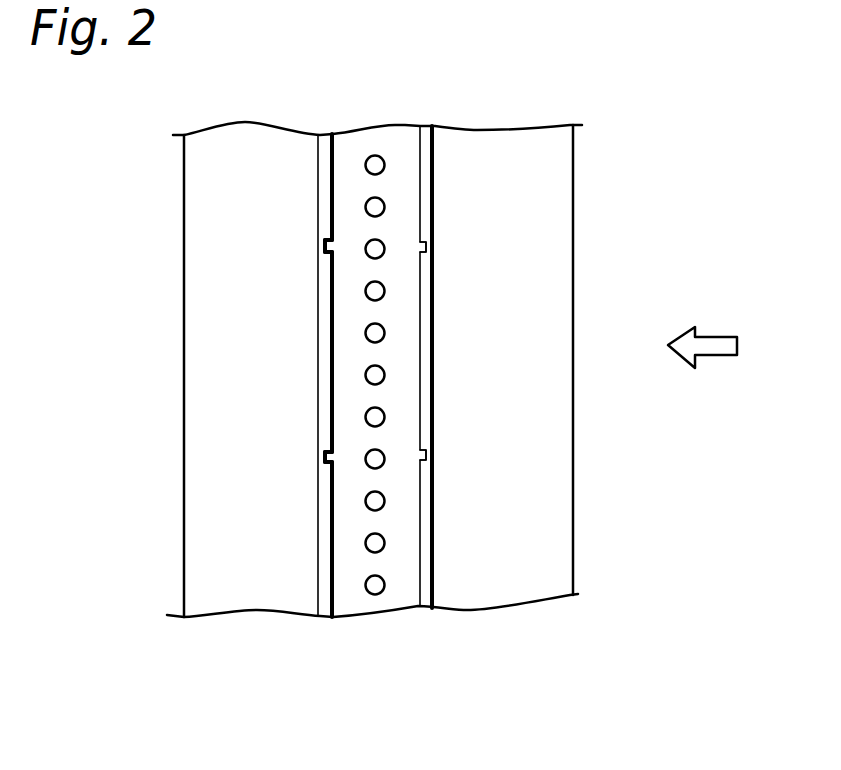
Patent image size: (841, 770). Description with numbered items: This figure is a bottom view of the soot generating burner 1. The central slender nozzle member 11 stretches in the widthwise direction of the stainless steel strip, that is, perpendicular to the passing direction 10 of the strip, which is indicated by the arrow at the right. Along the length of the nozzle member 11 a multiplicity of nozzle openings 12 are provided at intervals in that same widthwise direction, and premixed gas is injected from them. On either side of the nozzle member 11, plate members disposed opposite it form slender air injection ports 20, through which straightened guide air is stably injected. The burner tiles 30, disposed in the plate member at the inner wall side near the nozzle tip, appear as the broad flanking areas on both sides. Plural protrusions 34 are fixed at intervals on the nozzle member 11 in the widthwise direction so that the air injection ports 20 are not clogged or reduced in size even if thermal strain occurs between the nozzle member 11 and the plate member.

The soot generating burner 1 is at (110, 168).
The passing direction 10 is at (716, 360).
The nozzle member 11 is at (400, 133).
The nozzle openings 12 is at (365, 207).
The air injection ports 20 is at (325, 340).
The burner tiles 30 is at (205, 312).
The protrusions 34 is at (333, 233).